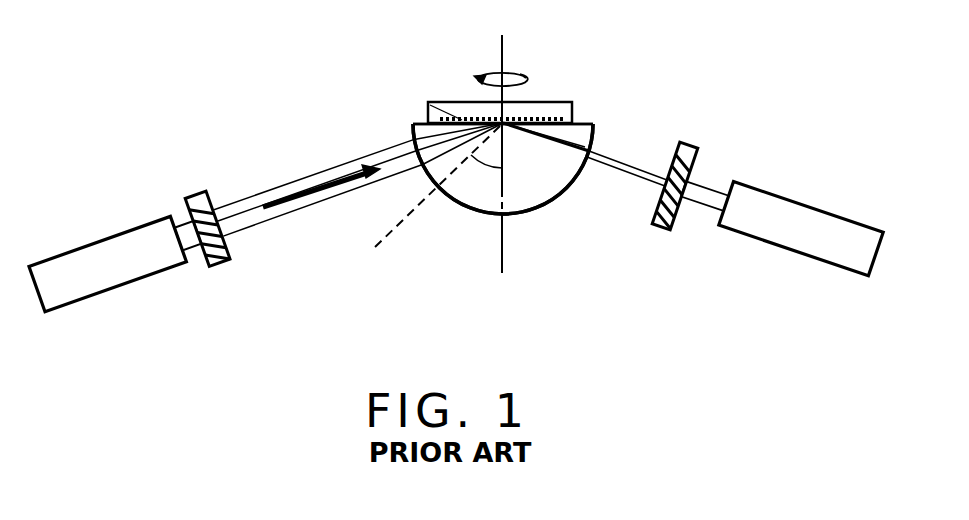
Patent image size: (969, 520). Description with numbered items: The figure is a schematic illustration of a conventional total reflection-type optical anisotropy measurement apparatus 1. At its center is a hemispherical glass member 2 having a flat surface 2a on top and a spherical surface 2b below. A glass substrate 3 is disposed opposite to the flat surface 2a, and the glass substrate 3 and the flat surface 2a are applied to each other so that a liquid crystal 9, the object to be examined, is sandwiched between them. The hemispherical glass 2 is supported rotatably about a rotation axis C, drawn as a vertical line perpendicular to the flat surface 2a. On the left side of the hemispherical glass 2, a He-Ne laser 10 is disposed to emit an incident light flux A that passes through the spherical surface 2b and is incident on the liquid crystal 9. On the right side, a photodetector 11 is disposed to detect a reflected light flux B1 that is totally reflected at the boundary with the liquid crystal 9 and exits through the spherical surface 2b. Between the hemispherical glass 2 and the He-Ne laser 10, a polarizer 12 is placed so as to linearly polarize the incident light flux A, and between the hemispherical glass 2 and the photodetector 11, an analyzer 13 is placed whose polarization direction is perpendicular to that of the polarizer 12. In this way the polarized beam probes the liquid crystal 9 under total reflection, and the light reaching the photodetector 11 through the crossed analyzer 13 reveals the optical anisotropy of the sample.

The optical anisotropy measurement apparatus 1 is at (693, 98).
The hemispherical glass member 2 is at (521, 216).
The flat surface 2a is at (592, 121).
The spherical surface 2b is at (568, 198).
The glass substrate 3 is at (445, 101).
The liquid crystal 9 is at (428, 103).
The He-Ne laser 10 is at (99, 303).
The photodetector 11 is at (815, 272).
The polarizer 12 is at (190, 203).
The analyzer 13 is at (698, 148).
The incident light flux A is at (272, 212).
The reflected light flux B1 is at (631, 166).
The rotation axis C is at (502, 50).